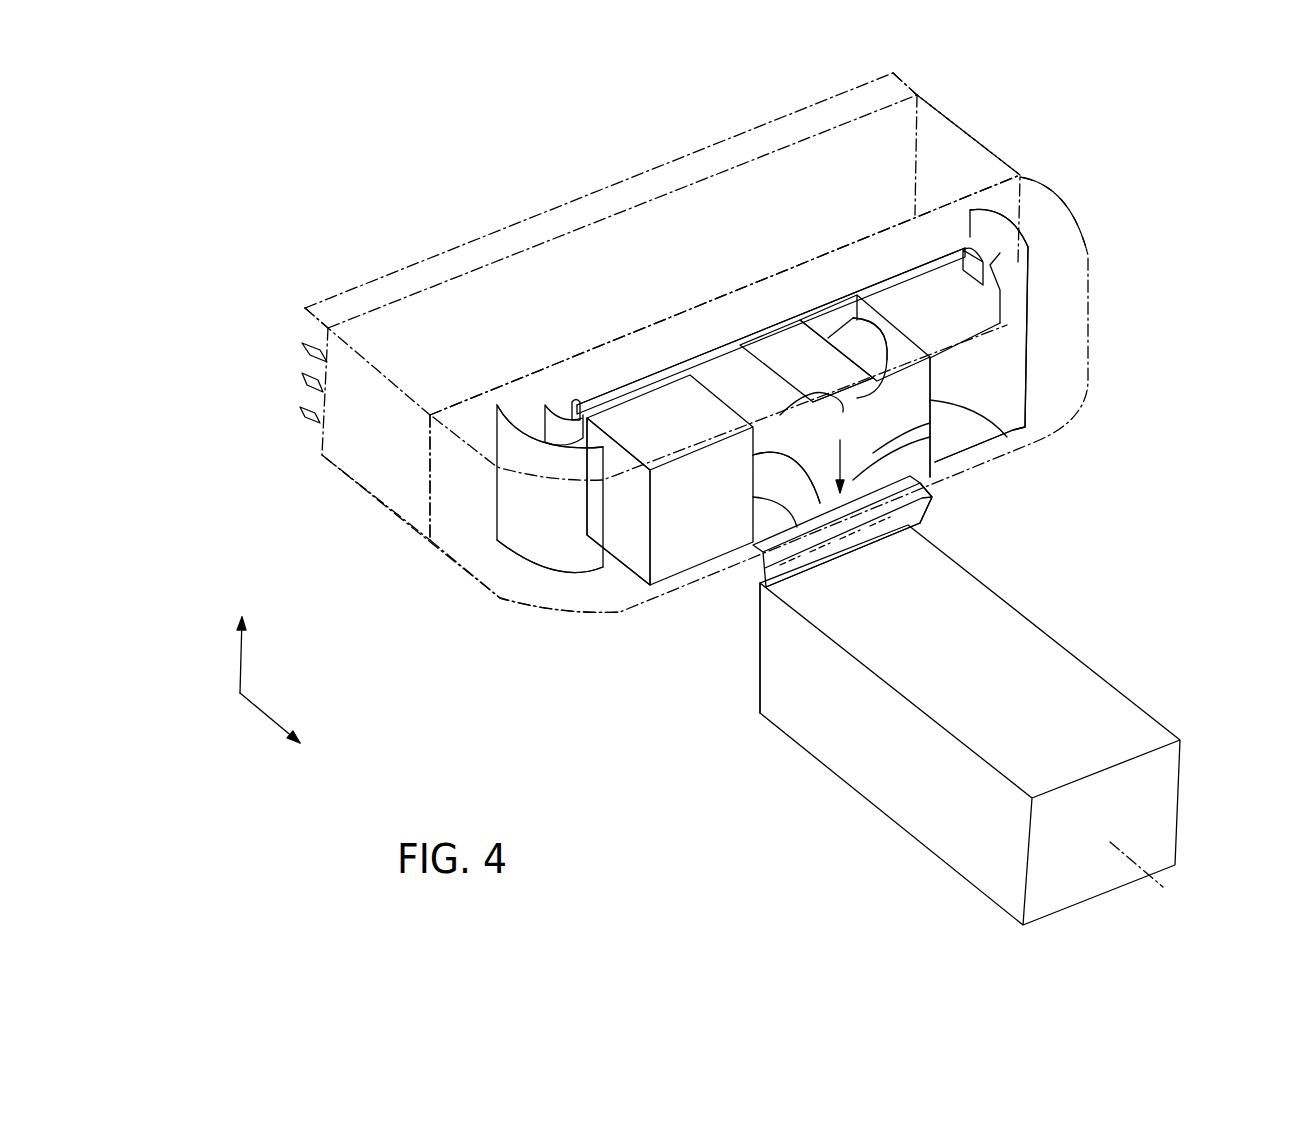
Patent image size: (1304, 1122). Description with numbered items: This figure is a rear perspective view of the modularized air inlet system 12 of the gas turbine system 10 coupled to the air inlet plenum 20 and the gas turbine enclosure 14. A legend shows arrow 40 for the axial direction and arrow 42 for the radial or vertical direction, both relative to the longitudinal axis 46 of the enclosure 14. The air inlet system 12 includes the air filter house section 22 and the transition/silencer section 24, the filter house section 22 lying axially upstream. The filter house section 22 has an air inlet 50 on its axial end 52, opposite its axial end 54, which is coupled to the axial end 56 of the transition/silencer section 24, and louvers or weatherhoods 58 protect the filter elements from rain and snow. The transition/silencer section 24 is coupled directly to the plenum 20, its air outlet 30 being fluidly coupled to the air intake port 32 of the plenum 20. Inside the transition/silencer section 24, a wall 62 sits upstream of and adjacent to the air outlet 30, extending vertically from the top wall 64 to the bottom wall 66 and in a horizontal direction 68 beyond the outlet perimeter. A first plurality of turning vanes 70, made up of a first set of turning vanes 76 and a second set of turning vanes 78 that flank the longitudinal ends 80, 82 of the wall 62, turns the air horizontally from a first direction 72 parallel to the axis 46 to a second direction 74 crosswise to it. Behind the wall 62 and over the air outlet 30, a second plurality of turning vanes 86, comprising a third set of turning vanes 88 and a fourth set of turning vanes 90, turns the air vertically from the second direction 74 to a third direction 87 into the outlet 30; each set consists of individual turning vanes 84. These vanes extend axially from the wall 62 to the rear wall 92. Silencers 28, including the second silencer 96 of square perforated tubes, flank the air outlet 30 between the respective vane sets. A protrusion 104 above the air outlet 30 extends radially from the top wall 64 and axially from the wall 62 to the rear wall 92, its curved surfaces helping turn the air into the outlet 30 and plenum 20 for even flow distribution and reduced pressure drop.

The gas turbine system 10 is at (1023, 103).
The modularized air inlet system 12 is at (1035, 178).
The gas turbine enclosure 14 is at (1085, 660).
The air inlet plenum 20 is at (725, 635).
The air filter house section 22 is at (383, 370).
The transition/silencer section 24 is at (453, 433).
The silencers 28 is at (680, 450).
The air outlet 30 is at (870, 487).
The air intake port 32 is at (925, 518).
The axial axis 40 is at (267, 713).
The radial axis 42 is at (238, 660).
The longitudinal axis 46 is at (1140, 862).
The air inlet 50 is at (321, 356).
The axial end 52 is at (325, 410).
The axial end 54 is at (427, 473).
The axial end 56 is at (425, 517).
The louvers or weatherhoods 58 is at (313, 330).
The wall 62 is at (772, 327).
The top wall 64 is at (473, 577).
The bottom wall 66 is at (500, 598).
The horizontal direction 68 is at (775, 295).
The first plurality of turning vanes 70 is at (552, 572).
The first direction 72 is at (930, 196).
The second direction 74 is at (1028, 262).
The first set of turning vanes 76 is at (1026, 337).
The second set of turning vanes 78 is at (550, 556).
The longitudinal end 80 is at (962, 222).
The longitudinal end 82 is at (572, 402).
The turning vanes 84 is at (520, 425).
The second plurality of turning vanes 86 is at (895, 355).
The third direction 87 is at (927, 483).
The third set of turning vanes 88 is at (870, 339).
The fourth set of turning vanes 90 is at (786, 477).
The rear wall 92 is at (1040, 313).
The second silencer 96 is at (618, 501).
The protrusion 104 is at (887, 352).